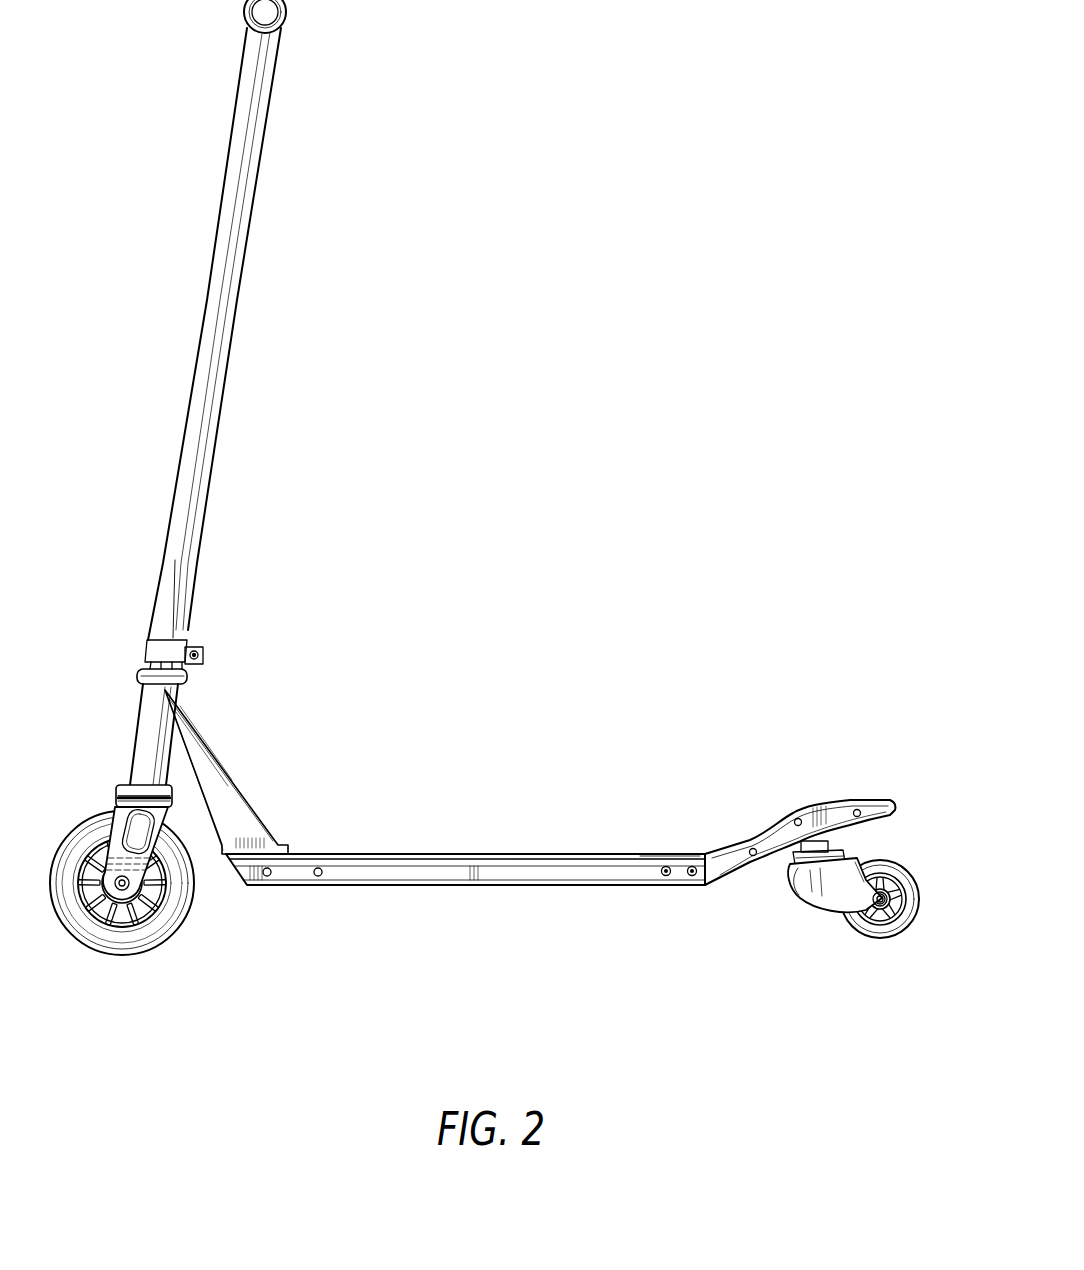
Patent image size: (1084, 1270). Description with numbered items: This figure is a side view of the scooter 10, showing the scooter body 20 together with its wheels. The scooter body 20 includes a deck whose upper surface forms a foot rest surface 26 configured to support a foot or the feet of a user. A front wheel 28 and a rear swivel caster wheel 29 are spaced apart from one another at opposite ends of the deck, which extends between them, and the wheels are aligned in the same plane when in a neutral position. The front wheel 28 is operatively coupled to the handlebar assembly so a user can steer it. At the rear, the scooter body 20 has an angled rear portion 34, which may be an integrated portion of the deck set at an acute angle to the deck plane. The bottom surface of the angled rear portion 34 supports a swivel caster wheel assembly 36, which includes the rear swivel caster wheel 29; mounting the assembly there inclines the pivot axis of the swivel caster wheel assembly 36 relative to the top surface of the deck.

The scooter 10 is at (479, 469).
The scooter body 20 is at (460, 885).
The foot rest surface 26 is at (658, 854).
The front wheel 28 is at (112, 950).
The rear swivel caster wheel 29 is at (881, 937).
The angled rear portion 34 is at (881, 814).
The swivel caster wheel assembly 36 is at (790, 888).